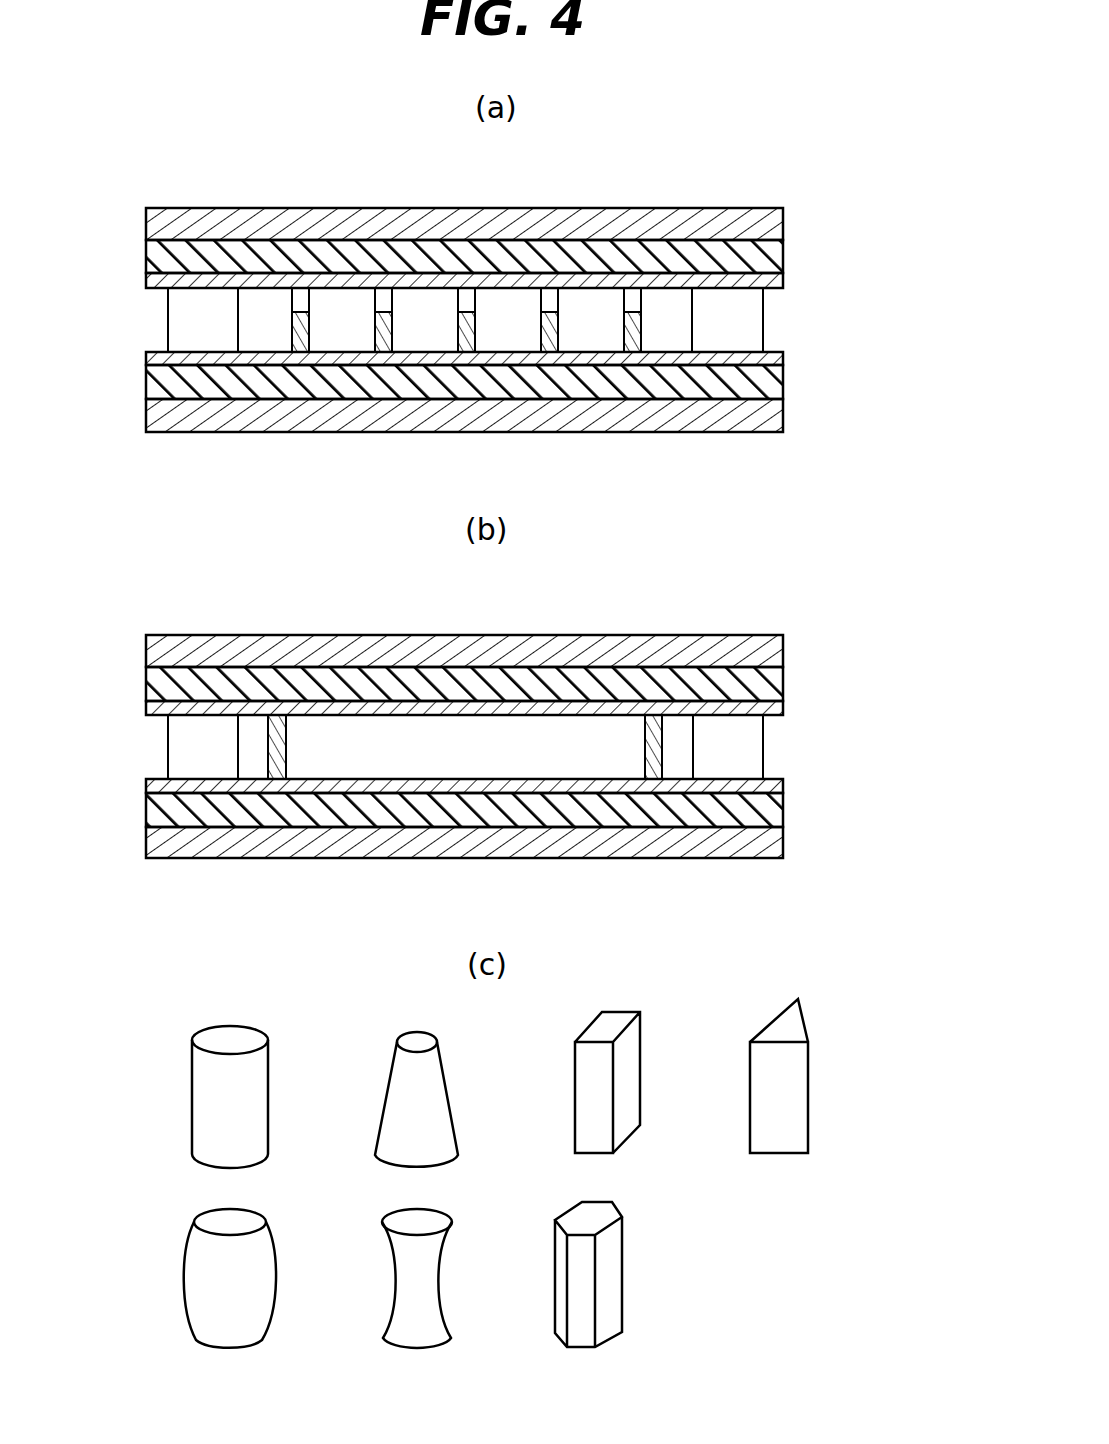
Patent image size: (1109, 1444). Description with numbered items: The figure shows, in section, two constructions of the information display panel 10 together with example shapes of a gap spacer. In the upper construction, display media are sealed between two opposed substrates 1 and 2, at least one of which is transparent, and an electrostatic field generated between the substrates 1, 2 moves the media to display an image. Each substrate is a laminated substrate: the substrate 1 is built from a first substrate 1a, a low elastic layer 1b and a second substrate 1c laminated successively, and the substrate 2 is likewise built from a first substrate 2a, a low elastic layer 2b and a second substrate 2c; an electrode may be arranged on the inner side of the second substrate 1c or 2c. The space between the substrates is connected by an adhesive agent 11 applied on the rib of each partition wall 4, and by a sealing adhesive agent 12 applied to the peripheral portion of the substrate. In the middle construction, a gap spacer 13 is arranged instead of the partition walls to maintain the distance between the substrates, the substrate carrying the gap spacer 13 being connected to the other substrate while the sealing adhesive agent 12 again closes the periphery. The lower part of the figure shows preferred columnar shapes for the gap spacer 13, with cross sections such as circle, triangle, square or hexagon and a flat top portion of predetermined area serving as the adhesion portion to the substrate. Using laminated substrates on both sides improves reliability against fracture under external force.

The information display panel 10 is at (797, 188).
The substrate 1 is at (930, 327).
The first substrate 1a is at (775, 420).
The low elastic layer 1b is at (775, 382).
The second substrate 1c is at (775, 358).
The substrate 2 is at (930, 162).
The first substrate 2a is at (775, 222).
The low elastic layer 2b is at (775, 255).
The second substrate 2c is at (783, 278).
The partition wall 4 is at (310, 327).
The adhesive agent 11 is at (300, 300).
The sealing adhesive agent 12 is at (218, 325).
The gap spacer 13 is at (282, 697).